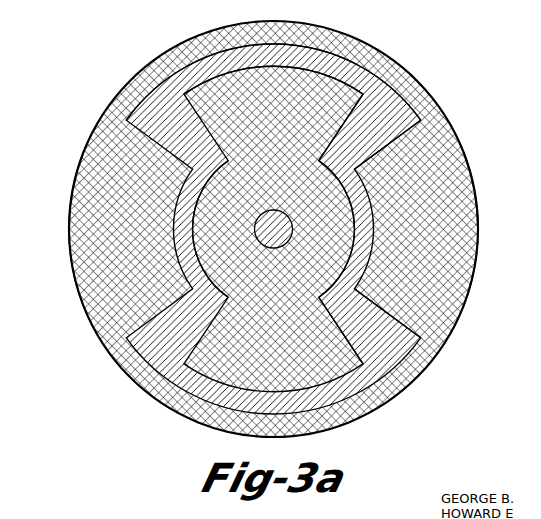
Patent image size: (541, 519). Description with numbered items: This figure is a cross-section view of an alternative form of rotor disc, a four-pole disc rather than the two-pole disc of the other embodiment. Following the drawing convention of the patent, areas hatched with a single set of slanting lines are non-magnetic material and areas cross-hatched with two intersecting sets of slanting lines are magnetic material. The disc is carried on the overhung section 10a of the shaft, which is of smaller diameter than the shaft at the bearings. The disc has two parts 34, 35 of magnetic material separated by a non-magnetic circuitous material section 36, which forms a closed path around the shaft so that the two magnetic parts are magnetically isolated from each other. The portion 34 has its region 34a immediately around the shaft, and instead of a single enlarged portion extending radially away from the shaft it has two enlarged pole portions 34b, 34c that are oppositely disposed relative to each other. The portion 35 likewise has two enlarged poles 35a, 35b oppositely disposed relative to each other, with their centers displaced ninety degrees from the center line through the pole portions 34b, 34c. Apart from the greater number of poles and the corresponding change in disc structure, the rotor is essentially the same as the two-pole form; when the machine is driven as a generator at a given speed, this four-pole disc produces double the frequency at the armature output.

The overhung section of the shaft 10a is at (268, 237).
The magnetic material part 34 is at (309, 169).
The region immediately around the shaft 34a is at (323, 250).
The enlarged pole portion 34b is at (359, 58).
The enlarged pole portion 34c is at (378, 377).
The magnetic material part 35 is at (438, 213).
The enlarged pole 35a is at (120, 157).
The enlarged pole 35b is at (447, 163).
The non-magnetic circuitous material section 36 is at (160, 96).